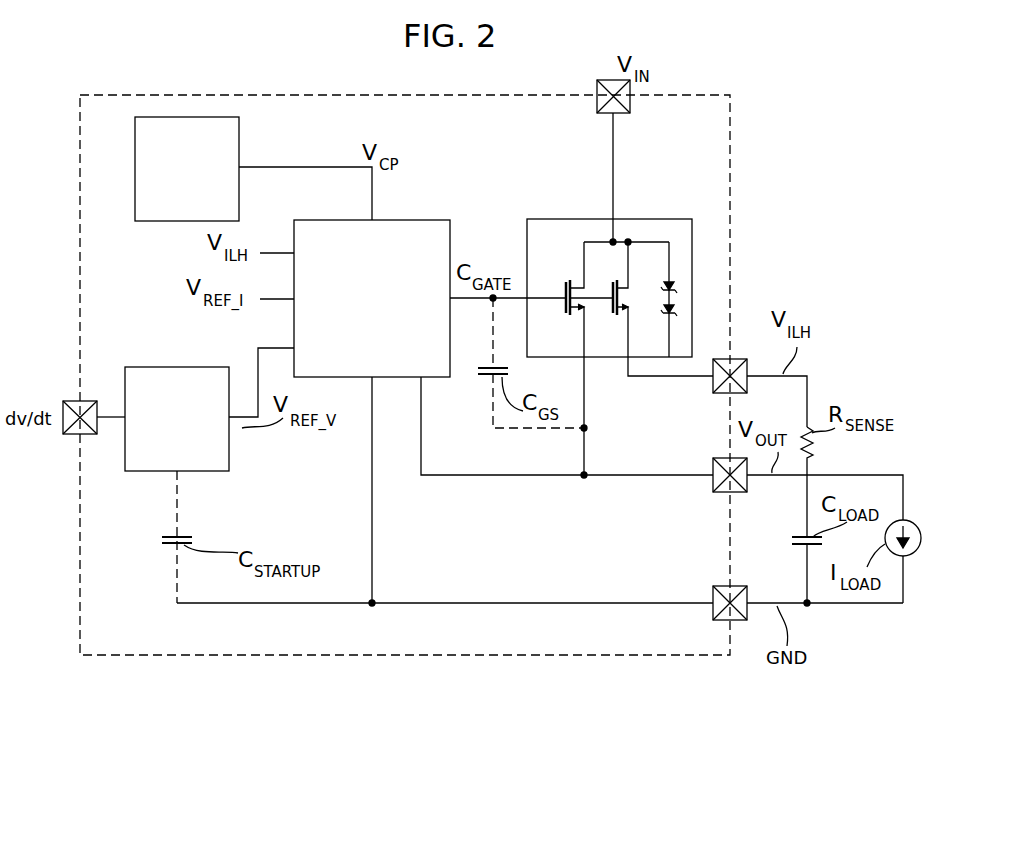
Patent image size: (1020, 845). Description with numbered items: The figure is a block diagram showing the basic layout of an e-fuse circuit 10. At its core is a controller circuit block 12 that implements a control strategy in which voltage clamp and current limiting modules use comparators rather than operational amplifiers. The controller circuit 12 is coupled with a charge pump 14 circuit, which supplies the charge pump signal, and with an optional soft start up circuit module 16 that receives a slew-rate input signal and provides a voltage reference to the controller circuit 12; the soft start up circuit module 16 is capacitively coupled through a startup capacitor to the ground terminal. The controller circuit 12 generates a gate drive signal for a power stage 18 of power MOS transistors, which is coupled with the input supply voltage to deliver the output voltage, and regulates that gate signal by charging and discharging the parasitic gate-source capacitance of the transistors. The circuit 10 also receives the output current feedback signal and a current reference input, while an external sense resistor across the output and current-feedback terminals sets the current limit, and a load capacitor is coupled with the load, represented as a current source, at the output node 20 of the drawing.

The e-fuse circuit 10 is at (96, 669).
The controller circuit block 12 is at (415, 230).
The charge pump circuit 14 is at (184, 130).
The soft start up circuit module 16 is at (217, 463).
The power stage 18 is at (710, 251).
The output node 20 is at (540, 477).